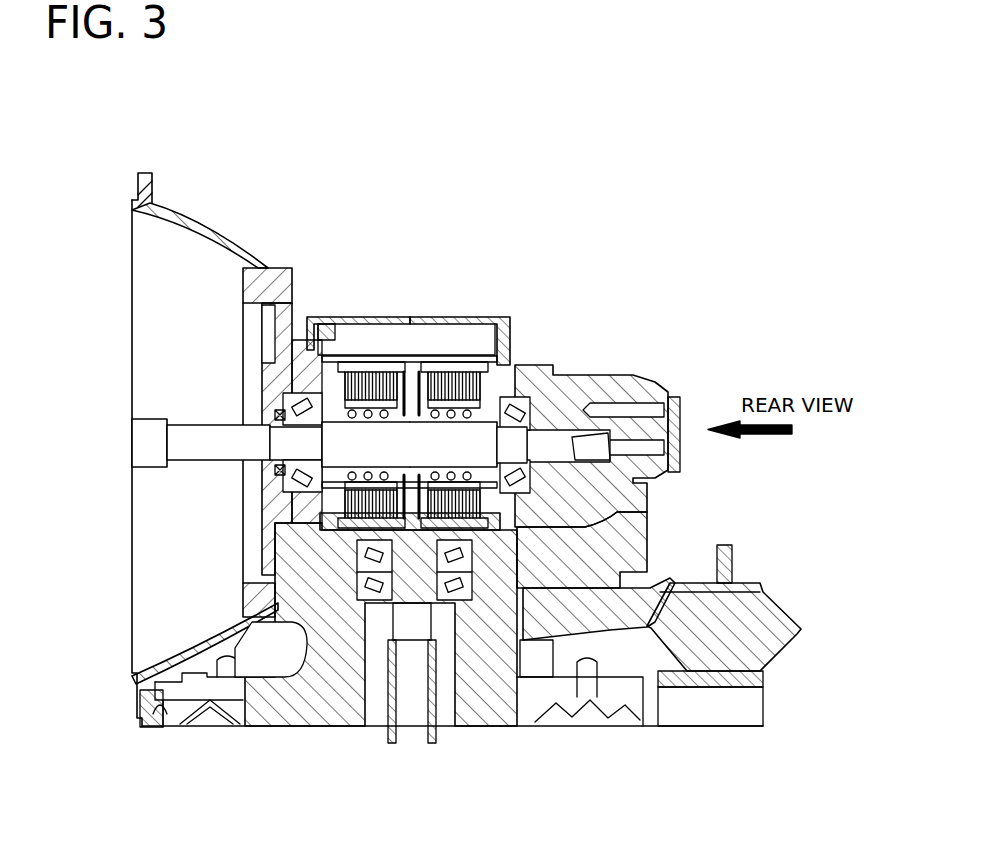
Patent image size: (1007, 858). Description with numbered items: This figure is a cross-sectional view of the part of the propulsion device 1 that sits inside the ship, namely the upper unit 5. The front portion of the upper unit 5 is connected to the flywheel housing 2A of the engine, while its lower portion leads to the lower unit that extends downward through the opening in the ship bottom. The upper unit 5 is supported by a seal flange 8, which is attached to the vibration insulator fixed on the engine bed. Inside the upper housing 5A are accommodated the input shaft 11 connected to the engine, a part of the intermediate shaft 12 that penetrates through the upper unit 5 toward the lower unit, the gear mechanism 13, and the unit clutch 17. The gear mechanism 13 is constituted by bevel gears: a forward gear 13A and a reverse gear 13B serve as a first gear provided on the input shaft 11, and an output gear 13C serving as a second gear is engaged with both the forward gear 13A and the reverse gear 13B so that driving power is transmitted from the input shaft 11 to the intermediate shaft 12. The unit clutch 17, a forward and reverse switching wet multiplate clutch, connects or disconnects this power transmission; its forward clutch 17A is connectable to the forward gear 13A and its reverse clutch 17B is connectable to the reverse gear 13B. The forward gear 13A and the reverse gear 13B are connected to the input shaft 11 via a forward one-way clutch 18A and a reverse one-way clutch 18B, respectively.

The propulsion device 1 is at (734, 211).
The flywheel housing 2A is at (214, 213).
The upper unit 5 is at (596, 305).
The upper housing 5A is at (497, 727).
The seal flange 8 is at (764, 685).
The input shaft 11 is at (176, 432).
The intermediate shaft 12 is at (424, 732).
The gear mechanism 13 is at (417, 405).
The forward gear 13A is at (333, 378).
The reverse gear 13B is at (484, 360).
The output gear 13C is at (560, 525).
The unit clutch 17 is at (407, 364).
The forward clutch 17A is at (382, 375).
The reverse clutch 17B is at (460, 375).
The forward one-way clutch 18A is at (335, 425).
The reverse one-way clutch 18B is at (483, 425).